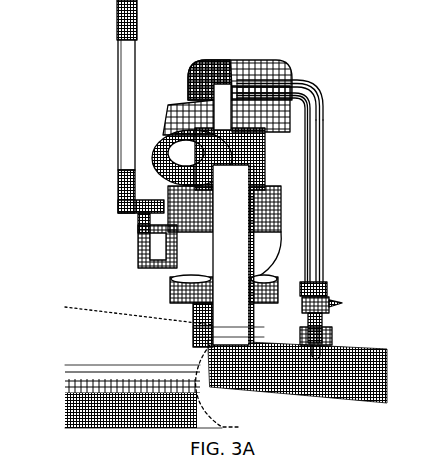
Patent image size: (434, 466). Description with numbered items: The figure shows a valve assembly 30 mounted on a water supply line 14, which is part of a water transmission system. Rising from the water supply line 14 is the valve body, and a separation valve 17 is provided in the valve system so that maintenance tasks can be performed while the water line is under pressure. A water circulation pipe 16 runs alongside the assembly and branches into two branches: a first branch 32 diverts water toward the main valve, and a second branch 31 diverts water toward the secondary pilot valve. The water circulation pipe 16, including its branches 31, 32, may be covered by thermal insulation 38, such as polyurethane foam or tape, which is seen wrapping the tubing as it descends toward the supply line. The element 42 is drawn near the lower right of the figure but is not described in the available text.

The water supply line 14 is at (132, 333).
The water circulation pipe 16 is at (313, 143).
The separation valve 17 is at (197, 243).
The valve assembly 30 is at (164, 210).
The second branch 31 is at (297, 85).
The first branch 32 is at (245, 67).
The thermal insulation 38 is at (325, 185).
The fitting 42 is at (311, 465).